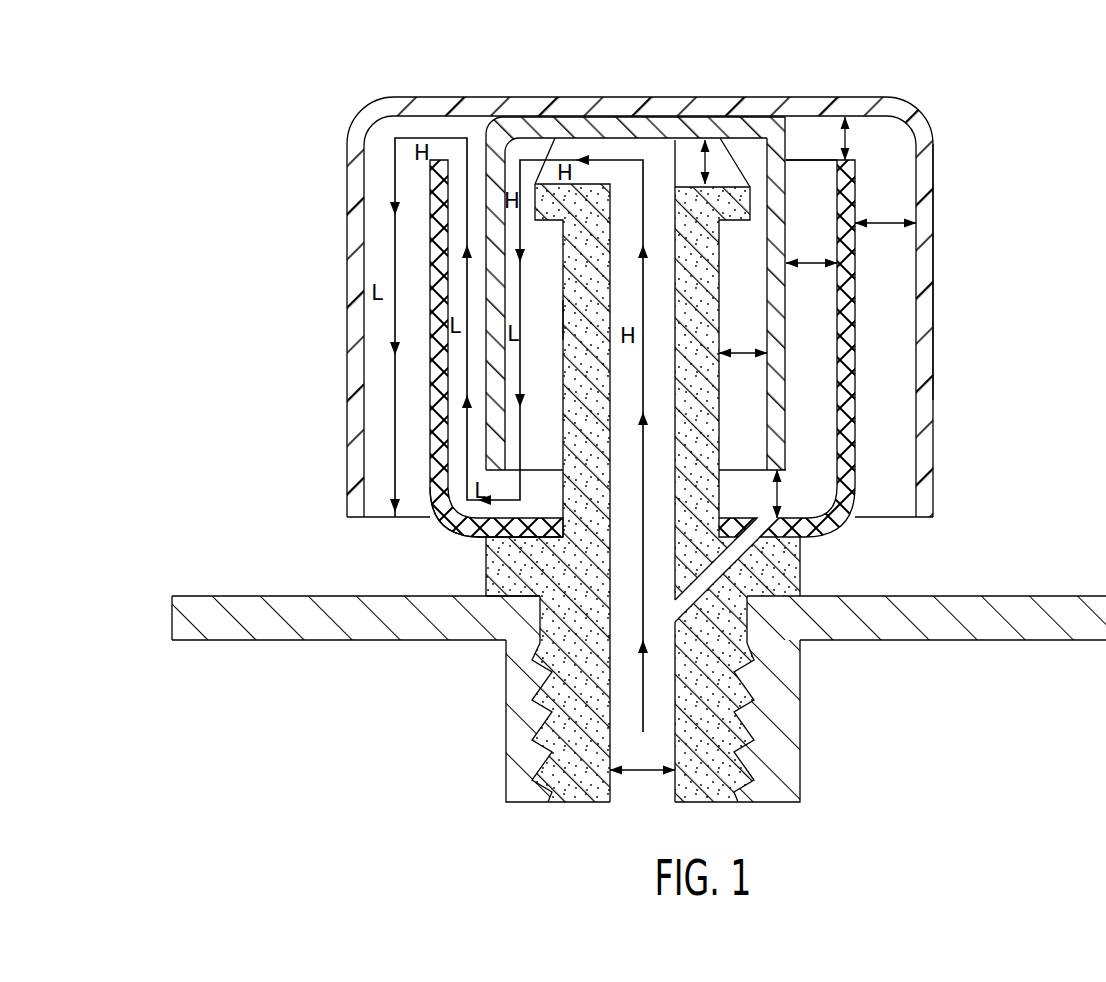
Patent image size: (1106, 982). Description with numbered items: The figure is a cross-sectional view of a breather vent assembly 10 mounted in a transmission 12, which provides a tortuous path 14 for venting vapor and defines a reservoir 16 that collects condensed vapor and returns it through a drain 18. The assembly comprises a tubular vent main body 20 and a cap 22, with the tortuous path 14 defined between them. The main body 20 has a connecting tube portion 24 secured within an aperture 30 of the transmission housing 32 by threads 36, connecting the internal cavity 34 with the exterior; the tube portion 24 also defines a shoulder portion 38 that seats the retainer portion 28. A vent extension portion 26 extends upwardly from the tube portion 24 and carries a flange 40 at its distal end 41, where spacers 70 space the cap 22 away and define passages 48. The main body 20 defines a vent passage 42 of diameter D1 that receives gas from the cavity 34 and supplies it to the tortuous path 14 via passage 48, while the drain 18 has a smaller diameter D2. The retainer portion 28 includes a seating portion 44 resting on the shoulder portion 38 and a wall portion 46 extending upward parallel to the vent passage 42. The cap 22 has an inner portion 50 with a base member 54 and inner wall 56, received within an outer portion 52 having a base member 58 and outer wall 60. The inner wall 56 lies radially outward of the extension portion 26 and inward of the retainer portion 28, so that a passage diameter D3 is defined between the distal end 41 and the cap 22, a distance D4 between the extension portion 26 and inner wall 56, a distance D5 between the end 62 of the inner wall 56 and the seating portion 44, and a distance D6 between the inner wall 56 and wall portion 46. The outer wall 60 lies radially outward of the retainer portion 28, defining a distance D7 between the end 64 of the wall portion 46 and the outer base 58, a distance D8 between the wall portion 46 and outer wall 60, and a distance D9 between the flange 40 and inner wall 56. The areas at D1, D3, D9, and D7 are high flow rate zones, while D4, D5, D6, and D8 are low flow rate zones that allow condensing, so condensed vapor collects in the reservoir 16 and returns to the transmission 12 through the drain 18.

The breather vent assembly 10 is at (972, 113).
The transmission 12 is at (639, 635).
The tortuous path 14 is at (443, 138).
The reservoir 16 is at (642, 371).
The drain 18 is at (683, 597).
The vent main body 20 is at (486, 578).
The cap 22 is at (639, 307).
The connecting tube portion 24 is at (678, 760).
The vent extension portion 26 is at (560, 322).
The retainer portion 28 is at (428, 522).
The aperture 30 is at (745, 632).
The housing 32 is at (1010, 596).
The internal cavity 34 is at (932, 682).
The threads 36 is at (766, 762).
The shoulder portion 38 is at (512, 597).
The flange 40 is at (755, 172).
The distal end 41 is at (613, 425).
The vent passage 42 is at (612, 680).
The seating portion 44 is at (453, 525).
The wall portion 46 is at (429, 371).
The passage 48 is at (690, 165).
The inner portion 50 is at (770, 405).
The outer portion 52 is at (938, 460).
The base member 54 is at (688, 281).
The inner wall 56 is at (787, 163).
The base member 58 is at (848, 138).
The outer wall 60 is at (937, 248).
The end 62 is at (767, 475).
The end 64 is at (836, 168).
The spacers 70 is at (667, 160).
The vent passage diameter D1 is at (645, 773).
The drain diameter D2 is at (735, 578).
The passage diameter D3 is at (707, 140).
The distance between vent extension portion and inner wall D4 is at (740, 357).
The distance between inner wall end and seating portion D5 is at (780, 482).
The distance between inner wall and wall portion D6 is at (806, 267).
The distance between wall portion end and outer base D7 is at (898, 104).
The distance between wall portion and outer wall D8 is at (874, 228).
The distance between flange and inner wall D9 is at (724, 221).